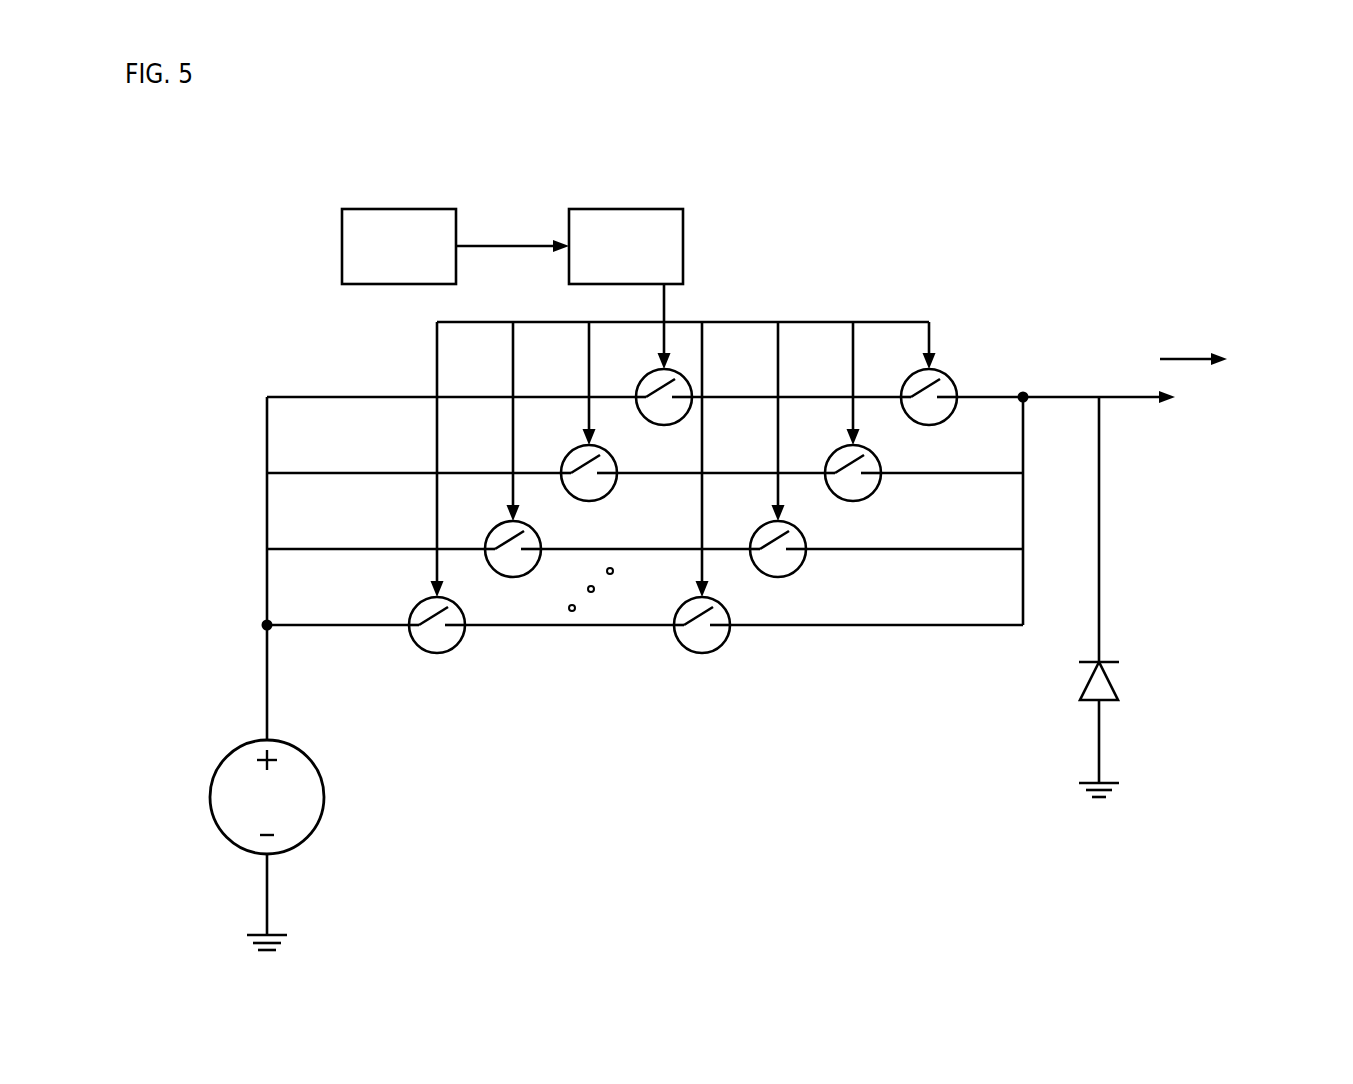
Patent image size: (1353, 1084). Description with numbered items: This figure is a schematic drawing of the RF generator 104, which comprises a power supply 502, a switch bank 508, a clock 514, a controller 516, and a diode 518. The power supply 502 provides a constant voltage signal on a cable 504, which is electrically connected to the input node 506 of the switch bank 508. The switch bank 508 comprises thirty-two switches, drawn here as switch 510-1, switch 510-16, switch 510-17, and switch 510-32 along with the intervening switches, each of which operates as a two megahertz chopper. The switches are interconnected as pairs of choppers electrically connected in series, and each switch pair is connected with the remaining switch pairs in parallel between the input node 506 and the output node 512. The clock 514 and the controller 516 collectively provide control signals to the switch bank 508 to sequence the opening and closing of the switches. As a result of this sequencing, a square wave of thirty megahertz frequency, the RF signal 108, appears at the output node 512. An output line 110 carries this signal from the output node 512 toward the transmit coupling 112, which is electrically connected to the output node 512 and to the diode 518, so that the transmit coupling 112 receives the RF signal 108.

The RF generator 104 is at (250, 172).
The RF signal 108 is at (1190, 358).
The output line 110 is at (1137, 396).
The transmit coupling 112 is at (1203, 435).
The power supply 502 is at (320, 818).
The cable 504 is at (266, 697).
The input node 506 is at (262, 622).
The switch bank 508 is at (845, 710).
The switch 510-1 is at (420, 650).
The switch 510-16 is at (645, 372).
The switch 510-17 is at (681, 650).
The switch 510-32 is at (950, 372).
The output node 512 is at (1027, 395).
The clock 514 is at (400, 209).
The controller 516 is at (627, 209).
The diode 518 is at (1108, 690).